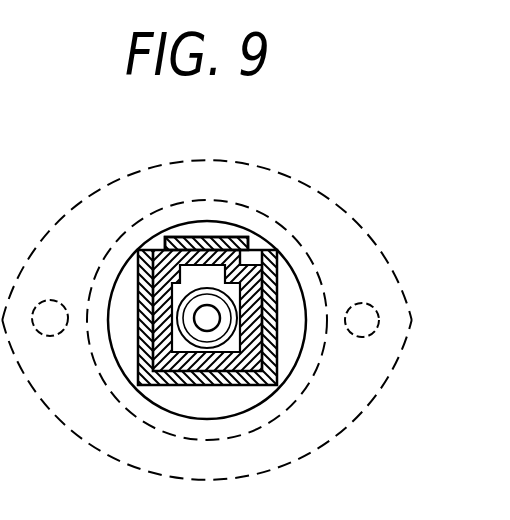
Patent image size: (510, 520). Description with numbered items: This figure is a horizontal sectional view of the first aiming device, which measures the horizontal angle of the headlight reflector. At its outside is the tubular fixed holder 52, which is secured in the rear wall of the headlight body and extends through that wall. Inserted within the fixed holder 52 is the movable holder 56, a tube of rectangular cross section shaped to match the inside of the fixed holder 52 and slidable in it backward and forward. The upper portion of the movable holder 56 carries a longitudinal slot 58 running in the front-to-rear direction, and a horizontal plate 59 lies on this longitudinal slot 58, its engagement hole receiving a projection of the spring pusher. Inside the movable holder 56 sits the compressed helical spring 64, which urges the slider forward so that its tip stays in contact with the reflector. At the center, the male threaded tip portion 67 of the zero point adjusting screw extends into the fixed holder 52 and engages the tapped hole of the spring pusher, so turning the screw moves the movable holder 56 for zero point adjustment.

The fixed holder 52 is at (127, 266).
The movable holder 56 is at (268, 263).
The longitudinal slot 58 is at (205, 248).
The horizontal plate 59 is at (247, 258).
The compressed helical spring 64 is at (228, 303).
The male threaded tip portion 67 is at (220, 326).